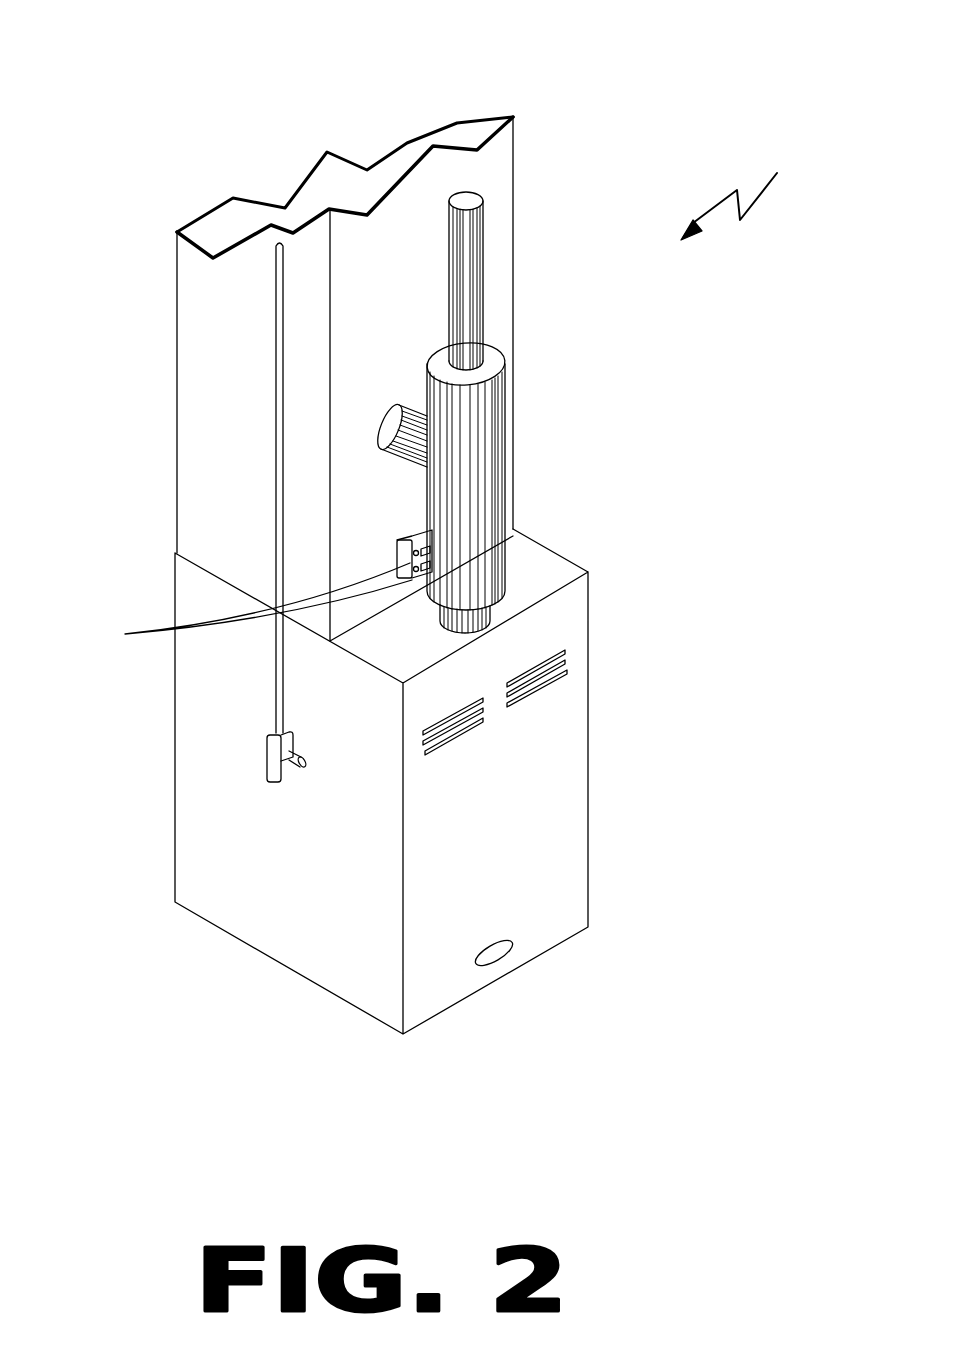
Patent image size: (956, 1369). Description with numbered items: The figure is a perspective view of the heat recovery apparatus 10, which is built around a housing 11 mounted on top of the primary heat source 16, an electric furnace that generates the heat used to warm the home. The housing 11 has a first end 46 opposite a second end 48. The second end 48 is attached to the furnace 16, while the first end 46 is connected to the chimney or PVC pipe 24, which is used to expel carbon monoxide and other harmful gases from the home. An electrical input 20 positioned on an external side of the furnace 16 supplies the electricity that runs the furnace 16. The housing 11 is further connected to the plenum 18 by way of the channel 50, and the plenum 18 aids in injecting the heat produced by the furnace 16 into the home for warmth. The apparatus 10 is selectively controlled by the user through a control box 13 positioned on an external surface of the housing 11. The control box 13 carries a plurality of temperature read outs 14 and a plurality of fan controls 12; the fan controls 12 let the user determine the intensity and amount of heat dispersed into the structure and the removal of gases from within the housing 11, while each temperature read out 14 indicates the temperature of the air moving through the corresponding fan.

The heat recovery apparatus 10 is at (746, 182).
The housing 11 is at (506, 380).
The fan controls 12 is at (241, 607).
The control box 13 is at (410, 537).
The temperature read outs 14 is at (405, 534).
The primary heat source 16 is at (573, 805).
The plenum 18 is at (513, 187).
The electrical input 20 is at (267, 758).
The chimney or PVC pipe 24 is at (472, 197).
The first end 46 is at (497, 345).
The second end 48 is at (487, 607).
The channel 50 is at (397, 403).